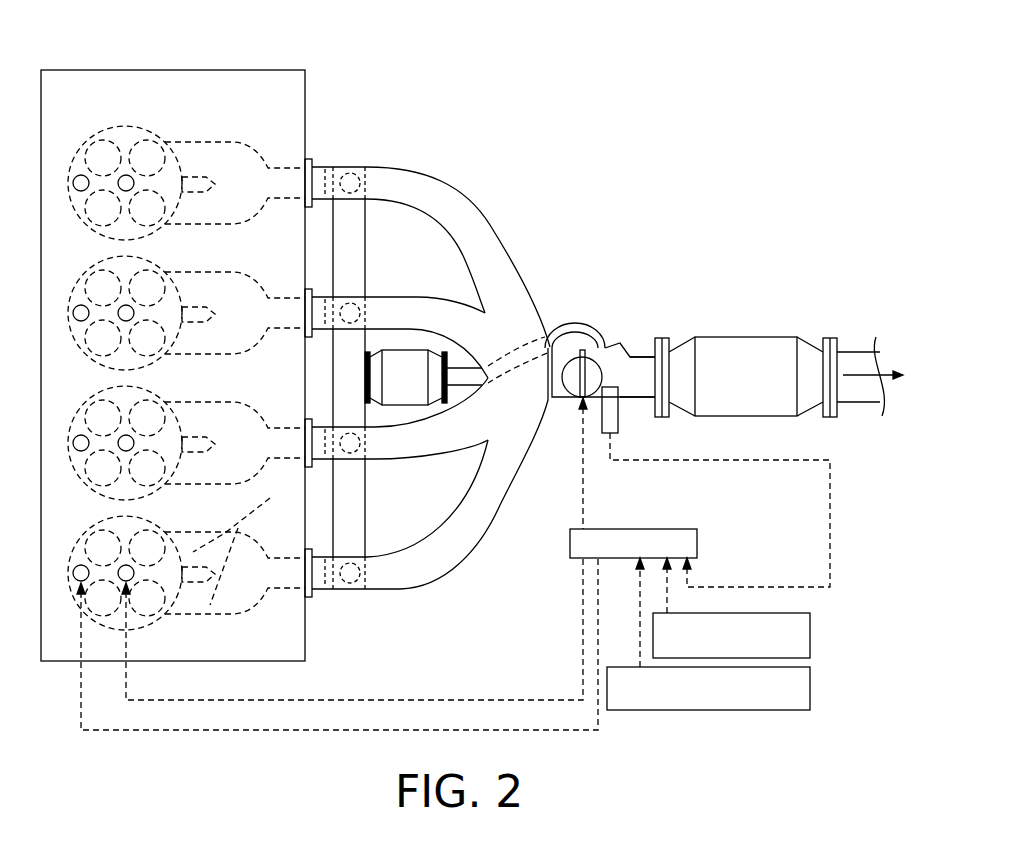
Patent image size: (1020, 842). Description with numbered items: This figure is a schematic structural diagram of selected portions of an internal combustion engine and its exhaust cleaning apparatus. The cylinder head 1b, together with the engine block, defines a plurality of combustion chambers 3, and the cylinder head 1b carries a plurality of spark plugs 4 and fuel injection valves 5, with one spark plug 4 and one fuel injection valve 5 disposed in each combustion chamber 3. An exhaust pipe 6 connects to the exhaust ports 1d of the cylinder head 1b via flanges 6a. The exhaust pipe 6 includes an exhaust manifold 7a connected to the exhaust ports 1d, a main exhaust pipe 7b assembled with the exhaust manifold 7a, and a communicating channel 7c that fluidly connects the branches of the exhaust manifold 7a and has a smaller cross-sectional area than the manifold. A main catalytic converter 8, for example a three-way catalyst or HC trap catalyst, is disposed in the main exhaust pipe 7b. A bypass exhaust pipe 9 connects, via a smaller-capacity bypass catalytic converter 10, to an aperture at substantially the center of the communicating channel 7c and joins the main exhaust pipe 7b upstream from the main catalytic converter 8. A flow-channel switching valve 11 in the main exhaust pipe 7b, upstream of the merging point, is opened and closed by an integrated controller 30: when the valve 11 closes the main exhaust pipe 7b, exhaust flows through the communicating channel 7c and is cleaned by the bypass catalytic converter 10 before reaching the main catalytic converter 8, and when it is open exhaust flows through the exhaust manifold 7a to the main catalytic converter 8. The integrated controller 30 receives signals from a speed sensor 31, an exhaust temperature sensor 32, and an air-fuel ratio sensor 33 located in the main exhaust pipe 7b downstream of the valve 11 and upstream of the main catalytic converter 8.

The cylinder head 1b is at (107, 97).
The exhaust port 1d is at (240, 539).
The combustion chamber 3 is at (165, 585).
The spark plug 4 is at (129, 565).
The fuel injection valve 5 is at (79, 565).
The exhaust pipe 6 is at (427, 388).
The flange 6a is at (307, 598).
The exhaust manifold 7a is at (477, 530).
The main exhaust pipe 7b is at (640, 365).
The communicating channel 7c is at (367, 237).
The main catalytic converter 8 is at (737, 393).
The bypass exhaust pipe 9 is at (563, 327).
The bypass catalytic converter 10 is at (410, 350).
The flow-channel switching valve 11 is at (582, 342).
The integrated controller 30 is at (698, 540).
The speed sensor 31 is at (810, 632).
The exhaust temperature sensor 32 is at (810, 684).
The air-fuel ratio sensor 33 is at (622, 413).